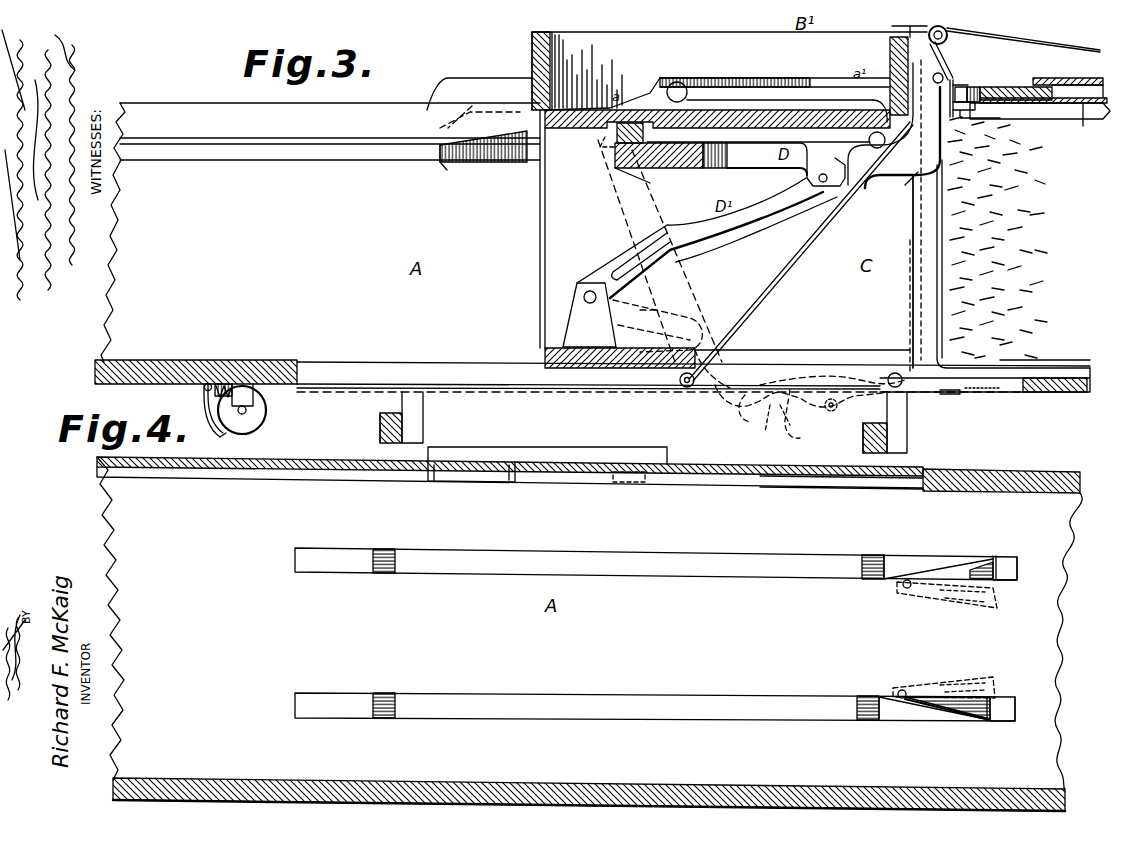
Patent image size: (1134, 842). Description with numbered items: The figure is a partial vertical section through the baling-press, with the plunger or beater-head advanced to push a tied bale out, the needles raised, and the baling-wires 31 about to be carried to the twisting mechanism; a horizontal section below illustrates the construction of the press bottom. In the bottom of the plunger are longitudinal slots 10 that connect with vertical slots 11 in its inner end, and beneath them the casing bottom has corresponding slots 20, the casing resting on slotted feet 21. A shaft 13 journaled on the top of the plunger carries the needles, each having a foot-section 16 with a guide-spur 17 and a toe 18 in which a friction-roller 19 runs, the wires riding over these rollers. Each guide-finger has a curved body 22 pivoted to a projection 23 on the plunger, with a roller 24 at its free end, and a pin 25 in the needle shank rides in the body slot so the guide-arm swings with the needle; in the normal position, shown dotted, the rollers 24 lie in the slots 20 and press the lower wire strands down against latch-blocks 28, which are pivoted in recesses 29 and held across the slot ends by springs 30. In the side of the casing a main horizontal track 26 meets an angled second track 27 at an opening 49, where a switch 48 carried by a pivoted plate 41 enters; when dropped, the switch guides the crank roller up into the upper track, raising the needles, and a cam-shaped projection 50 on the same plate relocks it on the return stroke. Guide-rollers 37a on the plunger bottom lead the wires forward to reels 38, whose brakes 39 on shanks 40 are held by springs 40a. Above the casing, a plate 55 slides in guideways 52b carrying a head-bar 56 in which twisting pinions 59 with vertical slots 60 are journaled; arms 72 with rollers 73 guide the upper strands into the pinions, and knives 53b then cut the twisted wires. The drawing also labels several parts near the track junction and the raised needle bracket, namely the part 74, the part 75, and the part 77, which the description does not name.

In FIG. 3, the longitudinal slots 10 is at (805, 352).
In FIG. 3, the vertical slots 11 is at (912, 296).
In FIG. 3, the shaft 13 is at (630, 175).
In FIG. 3, the foot-section 16 is at (915, 239).
In FIG. 3, the guide-spur 17 is at (800, 396).
In FIG. 3, the toe 18 is at (805, 438).
In FIG. 3, the friction-rollers 19 is at (948, 75).
In FIG. 3, the slots 20 is at (592, 376).
In FIG. 4, the slots 20 is at (663, 553).
In FIG. 3, the feet 21 is at (690, 232).
In FIG. 3, the curved body 22 is at (642, 275).
In FIG. 3, the projections 23 is at (589, 315).
In FIG. 3, the rollers 24 is at (891, 370).
In FIG. 3, the pins 25 is at (730, 164).
In FIG. 3, the horizontal track 26 is at (330, 120).
In FIG. 3, the second track 27 is at (729, 70).
In FIG. 4, the second track 27 is at (388, 553).
In FIG. 3, the latch-block 28 is at (962, 393).
In FIG. 4, the latch-block 28 is at (952, 565).
In FIG. 3, the recess 29 is at (990, 372).
In FIG. 4, the recess 29 is at (998, 606).
In FIG. 4, the springs 30 is at (972, 600).
In FIG. 3, the baling-wires 31 is at (1058, 123).
In FIG. 3, the guide-rollers 37a is at (667, 379).
In FIG. 3, the reels 38 is at (268, 413).
In FIG. 3, the brakes 39 is at (226, 428).
In FIG. 3, the shanks 40 is at (203, 405).
In FIG. 3, the springs 40a is at (232, 385).
In FIG. 4, the plate 41 is at (572, 448).
In FIG. 3, the switch 48 is at (505, 176).
In FIG. 4, the switch 48 is at (484, 478).
In FIG. 3, the opening 49 is at (446, 165).
In FIG. 4, the projection 50 is at (633, 483).
In FIG. 3, the guideways 52b is at (1047, 80).
In FIG. 3, the knife 53b is at (1068, 78).
In FIG. 3, the plate 55 is at (1083, 126).
In FIG. 3, the head-bar 56 is at (1005, 88).
In FIG. 3, the twisting pinions 59 is at (975, 88).
In FIG. 3, the vertical slots 60 is at (949, 94).
In FIG. 3, the arms 72 is at (1000, 127).
In FIG. 3, the rollers 73 is at (901, 187).
In FIG. 3, the plate 74 is at (632, 103).
In FIG. 3, the pawl 75 is at (683, 88).
In FIG. 3, the bracket arm 77 is at (929, 99).